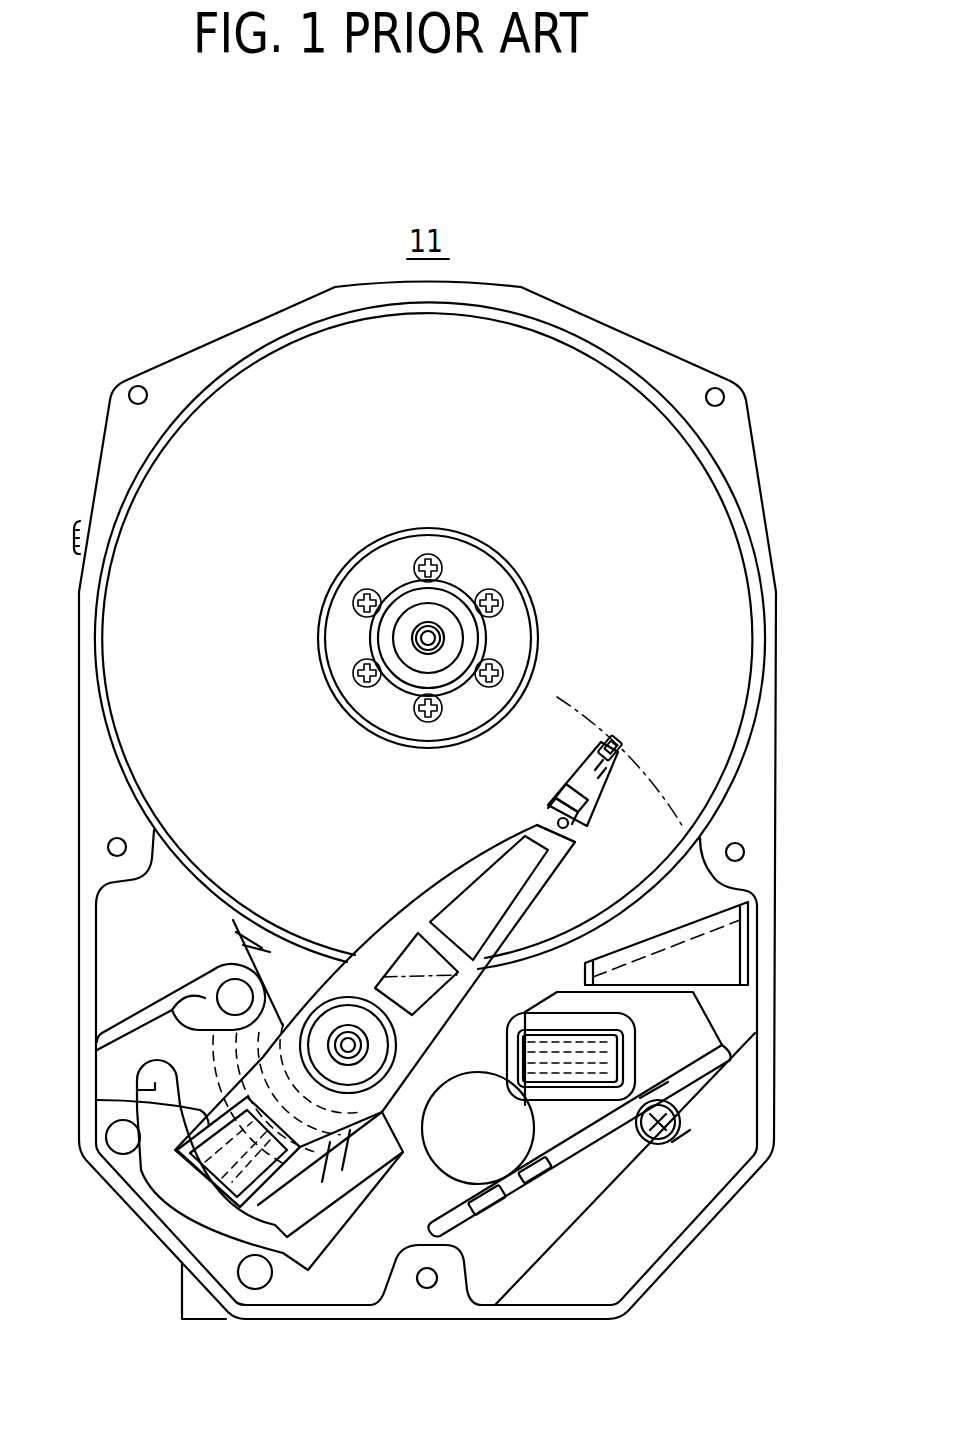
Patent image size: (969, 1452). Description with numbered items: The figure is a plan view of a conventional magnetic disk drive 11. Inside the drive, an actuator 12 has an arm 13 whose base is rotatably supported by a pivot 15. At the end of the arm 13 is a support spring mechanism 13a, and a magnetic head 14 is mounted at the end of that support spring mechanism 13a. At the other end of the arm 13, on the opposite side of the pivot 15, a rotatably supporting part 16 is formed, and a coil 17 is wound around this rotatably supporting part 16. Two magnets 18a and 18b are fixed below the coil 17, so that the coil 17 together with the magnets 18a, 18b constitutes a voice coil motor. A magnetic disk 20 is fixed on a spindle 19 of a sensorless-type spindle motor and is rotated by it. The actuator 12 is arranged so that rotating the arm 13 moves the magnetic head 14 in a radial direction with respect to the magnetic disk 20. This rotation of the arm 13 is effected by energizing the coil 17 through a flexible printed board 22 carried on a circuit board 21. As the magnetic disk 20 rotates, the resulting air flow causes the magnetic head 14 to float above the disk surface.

The magnetic disk drive 11 is at (425, 801).
The actuator 12 is at (383, 1113).
The arm 13 is at (540, 884).
The support spring mechanism 13a is at (592, 793).
The magnetic head 14 is at (619, 733).
The pivot 15 is at (348, 1045).
The rotatably supporting part 16 is at (97, 1100).
The coil 17 is at (338, 1222).
The magnet 18a is at (143, 1066).
The magnet 18b is at (173, 1007).
The spindle 19 is at (440, 638).
The magnetic disk 20 is at (727, 618).
The circuit board 21 is at (597, 1127).
The flexible printed board 22 is at (487, 1102).